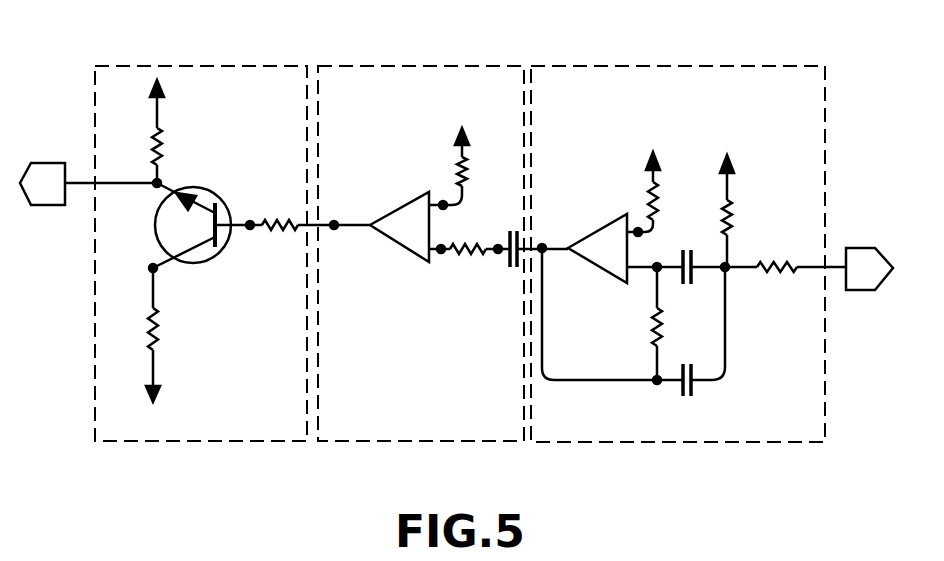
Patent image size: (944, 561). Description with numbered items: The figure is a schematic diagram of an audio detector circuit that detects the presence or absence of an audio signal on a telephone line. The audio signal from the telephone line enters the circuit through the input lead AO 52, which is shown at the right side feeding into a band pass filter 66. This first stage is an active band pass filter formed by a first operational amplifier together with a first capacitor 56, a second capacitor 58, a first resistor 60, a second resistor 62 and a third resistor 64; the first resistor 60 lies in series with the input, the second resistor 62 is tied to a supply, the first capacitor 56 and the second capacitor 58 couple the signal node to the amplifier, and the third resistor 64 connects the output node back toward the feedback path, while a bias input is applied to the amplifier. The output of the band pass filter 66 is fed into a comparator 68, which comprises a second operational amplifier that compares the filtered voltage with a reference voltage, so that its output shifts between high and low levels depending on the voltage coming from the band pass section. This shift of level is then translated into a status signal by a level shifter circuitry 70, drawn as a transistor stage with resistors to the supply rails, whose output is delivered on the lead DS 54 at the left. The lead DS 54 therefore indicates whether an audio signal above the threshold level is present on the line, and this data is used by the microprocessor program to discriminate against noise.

The input lead AO 52 is at (876, 249).
The lead DS 54 is at (47, 163).
The capacitor C1 56 is at (691, 272).
The capacitor C2 58 is at (698, 389).
The resistor R1 60 is at (777, 273).
The resistor R2 62 is at (721, 206).
The resistor R3 64 is at (663, 322).
The band pass filter 66 is at (688, 239).
The comparator 68 is at (494, 62).
The level shifter circuitry 70 is at (300, 62).